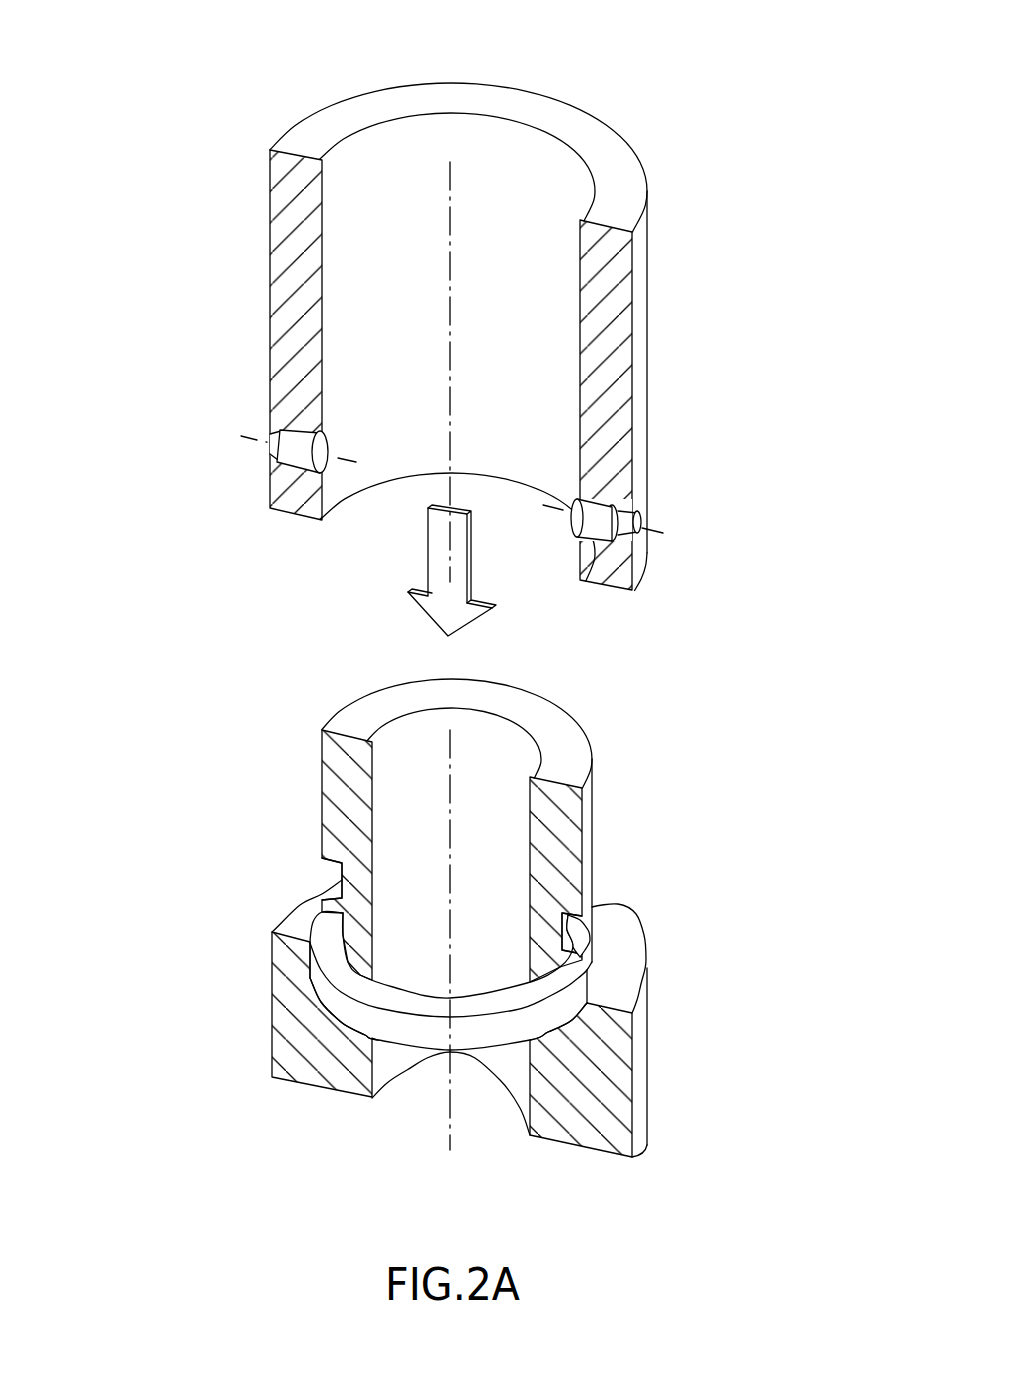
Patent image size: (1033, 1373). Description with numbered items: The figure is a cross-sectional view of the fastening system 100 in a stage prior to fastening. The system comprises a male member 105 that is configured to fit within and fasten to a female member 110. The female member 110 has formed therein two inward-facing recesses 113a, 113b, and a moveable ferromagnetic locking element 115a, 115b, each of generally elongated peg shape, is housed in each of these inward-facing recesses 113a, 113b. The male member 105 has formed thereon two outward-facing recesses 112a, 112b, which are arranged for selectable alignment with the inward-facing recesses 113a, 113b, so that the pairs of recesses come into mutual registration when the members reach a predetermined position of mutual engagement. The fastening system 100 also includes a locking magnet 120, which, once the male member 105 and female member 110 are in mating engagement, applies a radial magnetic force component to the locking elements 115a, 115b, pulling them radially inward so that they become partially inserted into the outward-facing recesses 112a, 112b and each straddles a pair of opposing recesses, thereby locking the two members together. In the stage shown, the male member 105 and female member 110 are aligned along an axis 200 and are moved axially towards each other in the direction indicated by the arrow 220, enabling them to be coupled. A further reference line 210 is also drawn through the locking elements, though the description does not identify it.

The fastening system 100 is at (237, 70).
The male member 105 is at (665, 1012).
The female member 110 is at (665, 275).
The outward-facing recess 112a is at (322, 862).
The outward-facing recess 112b is at (577, 948).
The inward-facing recess 113a is at (278, 432).
The inward-facing recess 113b is at (637, 513).
The ferromagnetic locking element 115a is at (328, 462).
The ferromagnetic locking element 115b is at (628, 578).
The locking magnet 120 is at (420, 1035).
The axis 200 is at (450, 217).
The peg axis 210 is at (243, 437).
The arrow 220 is at (460, 595).